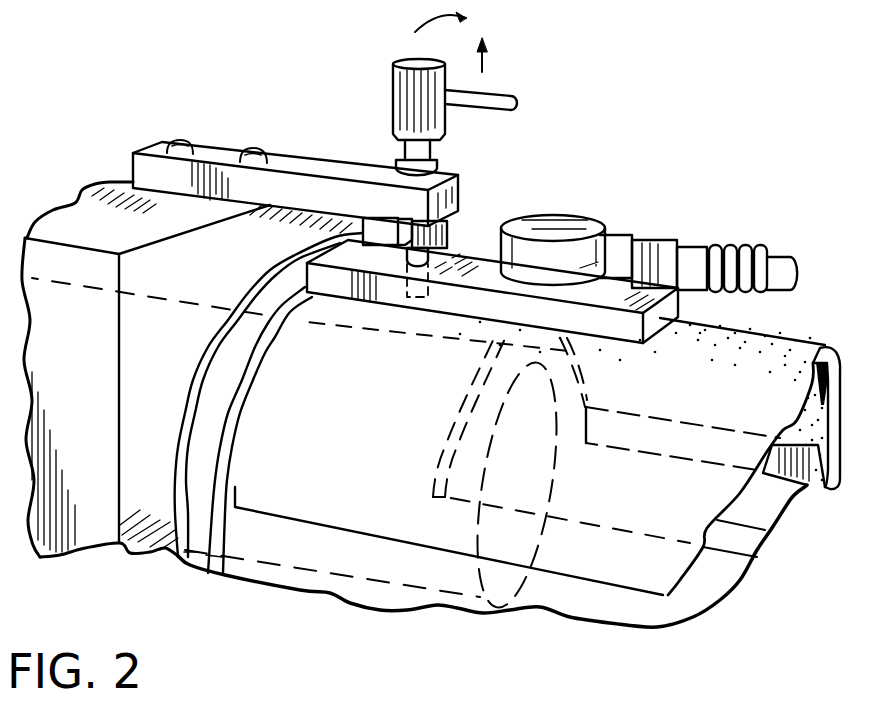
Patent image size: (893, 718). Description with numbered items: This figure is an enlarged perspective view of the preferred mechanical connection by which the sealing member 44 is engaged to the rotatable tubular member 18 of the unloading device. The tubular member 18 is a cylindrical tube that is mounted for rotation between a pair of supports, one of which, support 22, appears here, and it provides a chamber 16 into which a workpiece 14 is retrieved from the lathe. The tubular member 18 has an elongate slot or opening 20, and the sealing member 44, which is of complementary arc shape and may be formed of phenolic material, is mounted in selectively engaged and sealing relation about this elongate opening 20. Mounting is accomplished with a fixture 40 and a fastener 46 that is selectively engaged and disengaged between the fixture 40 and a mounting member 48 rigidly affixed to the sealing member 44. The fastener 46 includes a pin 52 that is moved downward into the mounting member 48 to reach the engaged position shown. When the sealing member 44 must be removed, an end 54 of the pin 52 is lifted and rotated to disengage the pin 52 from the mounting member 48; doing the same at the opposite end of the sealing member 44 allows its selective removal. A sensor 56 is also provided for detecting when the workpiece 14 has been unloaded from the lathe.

The workpiece 14 is at (415, 592).
The chamber 16 is at (767, 507).
The tubular member 18 is at (698, 601).
The elongate slot or opening 20 is at (690, 423).
The support 22 is at (65, 222).
The fixture 40 is at (308, 163).
The sealing member 44 is at (775, 336).
The fastener 46 is at (393, 75).
The mounting member 48 is at (470, 265).
The pin 52 is at (404, 249).
The end of pin 54 is at (500, 89).
The sensor 56 is at (615, 233).